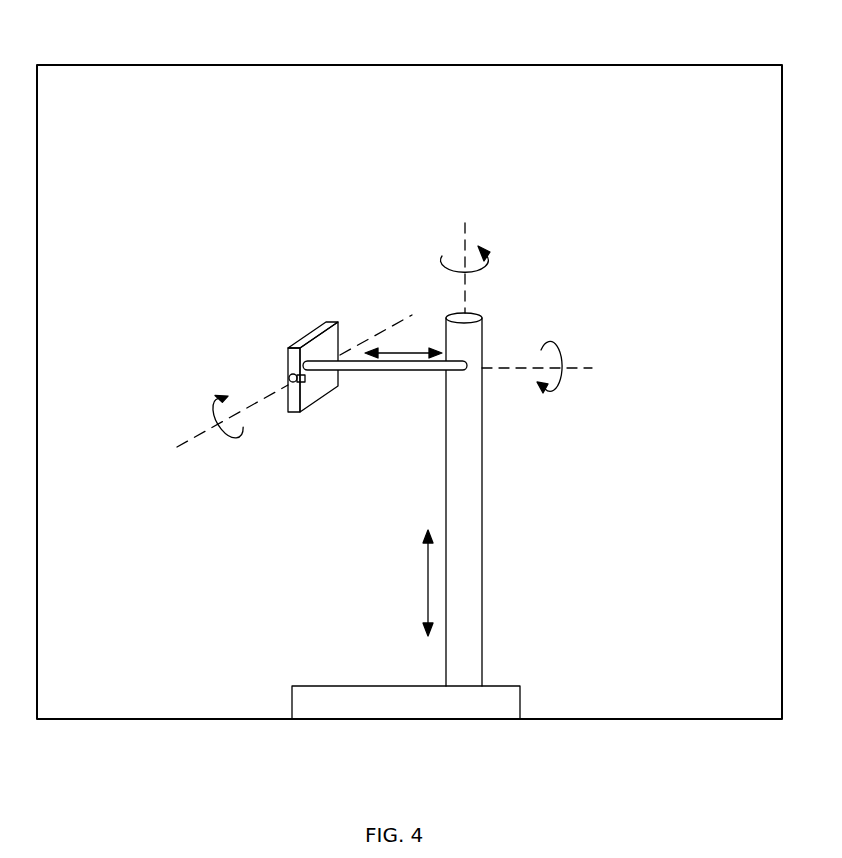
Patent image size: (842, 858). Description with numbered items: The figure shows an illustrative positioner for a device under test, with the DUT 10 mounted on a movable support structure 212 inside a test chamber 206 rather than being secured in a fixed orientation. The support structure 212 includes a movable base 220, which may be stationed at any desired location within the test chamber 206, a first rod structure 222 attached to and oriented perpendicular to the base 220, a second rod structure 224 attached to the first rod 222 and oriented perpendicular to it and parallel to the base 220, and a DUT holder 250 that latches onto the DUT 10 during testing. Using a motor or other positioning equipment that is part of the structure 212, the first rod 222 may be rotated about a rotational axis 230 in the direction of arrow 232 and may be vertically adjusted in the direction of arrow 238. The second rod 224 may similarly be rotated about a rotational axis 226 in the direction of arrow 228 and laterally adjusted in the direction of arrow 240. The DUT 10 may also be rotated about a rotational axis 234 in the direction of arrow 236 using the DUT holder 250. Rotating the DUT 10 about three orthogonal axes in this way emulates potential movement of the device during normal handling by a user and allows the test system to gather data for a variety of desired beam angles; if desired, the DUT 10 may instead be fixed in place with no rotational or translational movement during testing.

The device under test 10 is at (302, 346).
The test chamber 206 is at (700, 58).
The movable support structure 212 is at (583, 210).
The base 220 is at (513, 700).
The first rod structure 222 is at (477, 461).
The second rod structure 224 is at (403, 371).
The rotational axis 226 is at (586, 365).
The arrow 228 is at (563, 386).
The rotational axis 230 is at (462, 231).
The arrow 232 is at (486, 268).
The rotational axis 234 is at (198, 437).
The arrow 236 is at (207, 412).
The arrow 238 is at (428, 568).
The arrow 240 is at (383, 347).
The DUT holder 250 is at (305, 382).